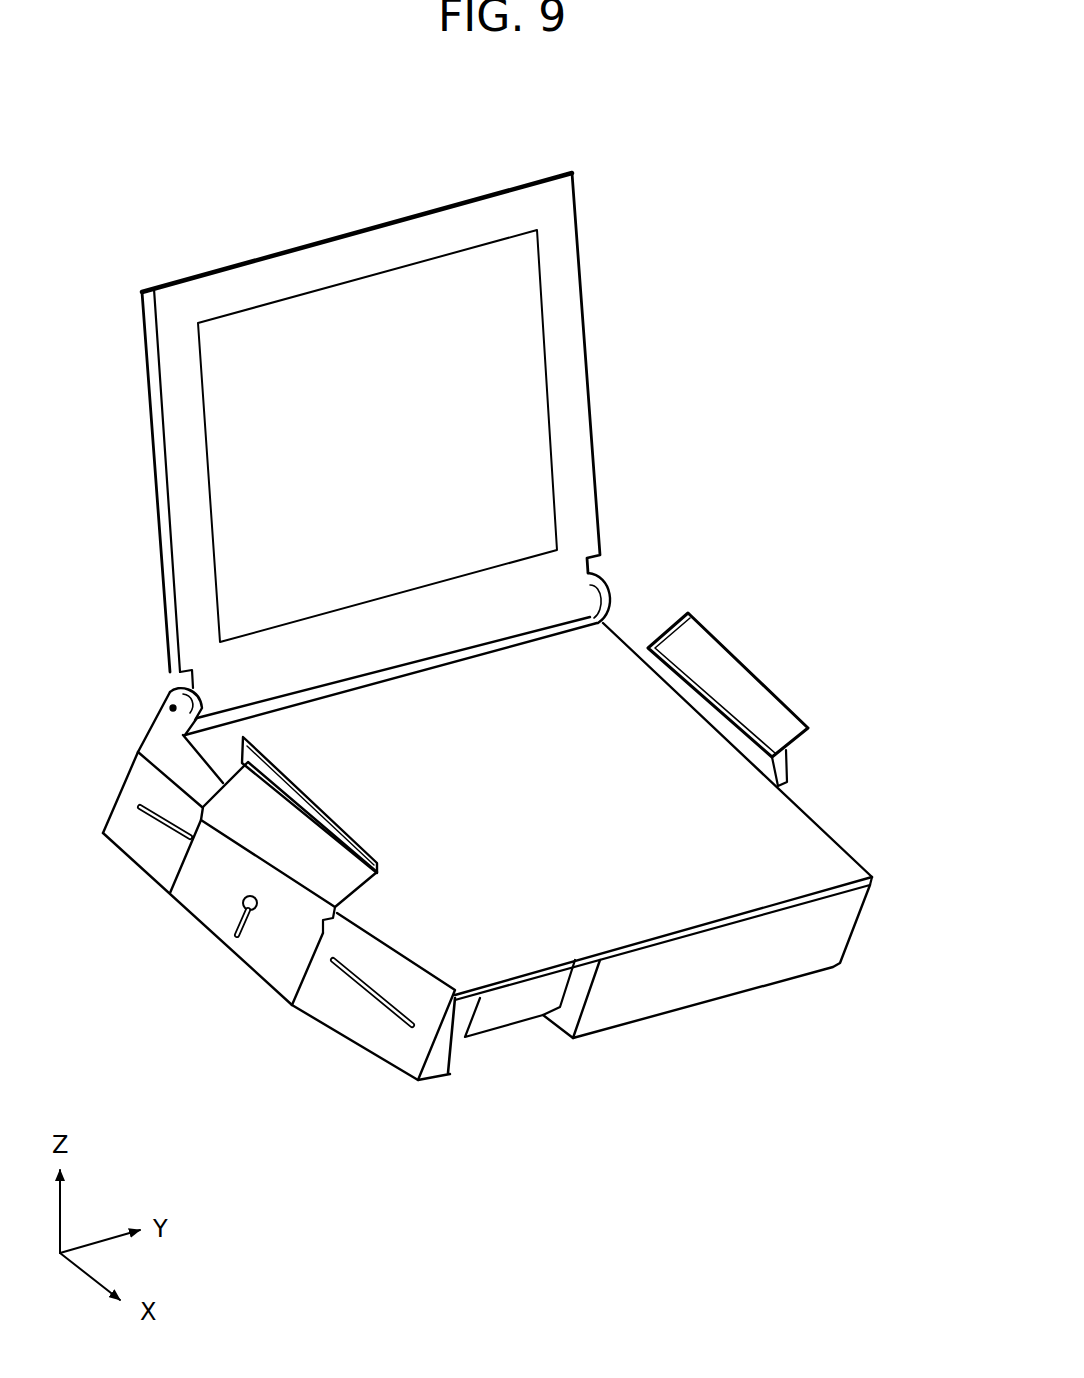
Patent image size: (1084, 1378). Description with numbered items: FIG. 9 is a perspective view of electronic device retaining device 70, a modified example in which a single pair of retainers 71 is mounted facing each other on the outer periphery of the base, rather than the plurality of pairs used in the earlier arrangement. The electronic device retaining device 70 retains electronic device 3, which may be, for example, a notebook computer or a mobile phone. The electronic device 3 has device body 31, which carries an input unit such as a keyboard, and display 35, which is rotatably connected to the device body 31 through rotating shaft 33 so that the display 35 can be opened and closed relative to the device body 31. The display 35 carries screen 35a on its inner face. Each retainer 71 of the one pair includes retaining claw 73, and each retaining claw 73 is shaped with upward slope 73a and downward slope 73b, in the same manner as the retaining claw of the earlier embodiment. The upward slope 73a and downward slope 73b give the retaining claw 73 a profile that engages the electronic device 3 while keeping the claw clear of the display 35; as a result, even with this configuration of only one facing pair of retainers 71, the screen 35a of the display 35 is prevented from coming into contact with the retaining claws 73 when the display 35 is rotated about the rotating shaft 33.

The electronic device 3 is at (648, 275).
The device body 31 is at (827, 863).
The rotating shaft 33 is at (167, 693).
The display 35 is at (557, 235).
The screen 35a is at (442, 297).
The electronic device retaining device 70 is at (793, 1042).
The retainer 71 is at (253, 998).
The retaining claw 73 is at (377, 892).
The upward slope 73a is at (267, 747).
The downward slope 73b is at (353, 903).